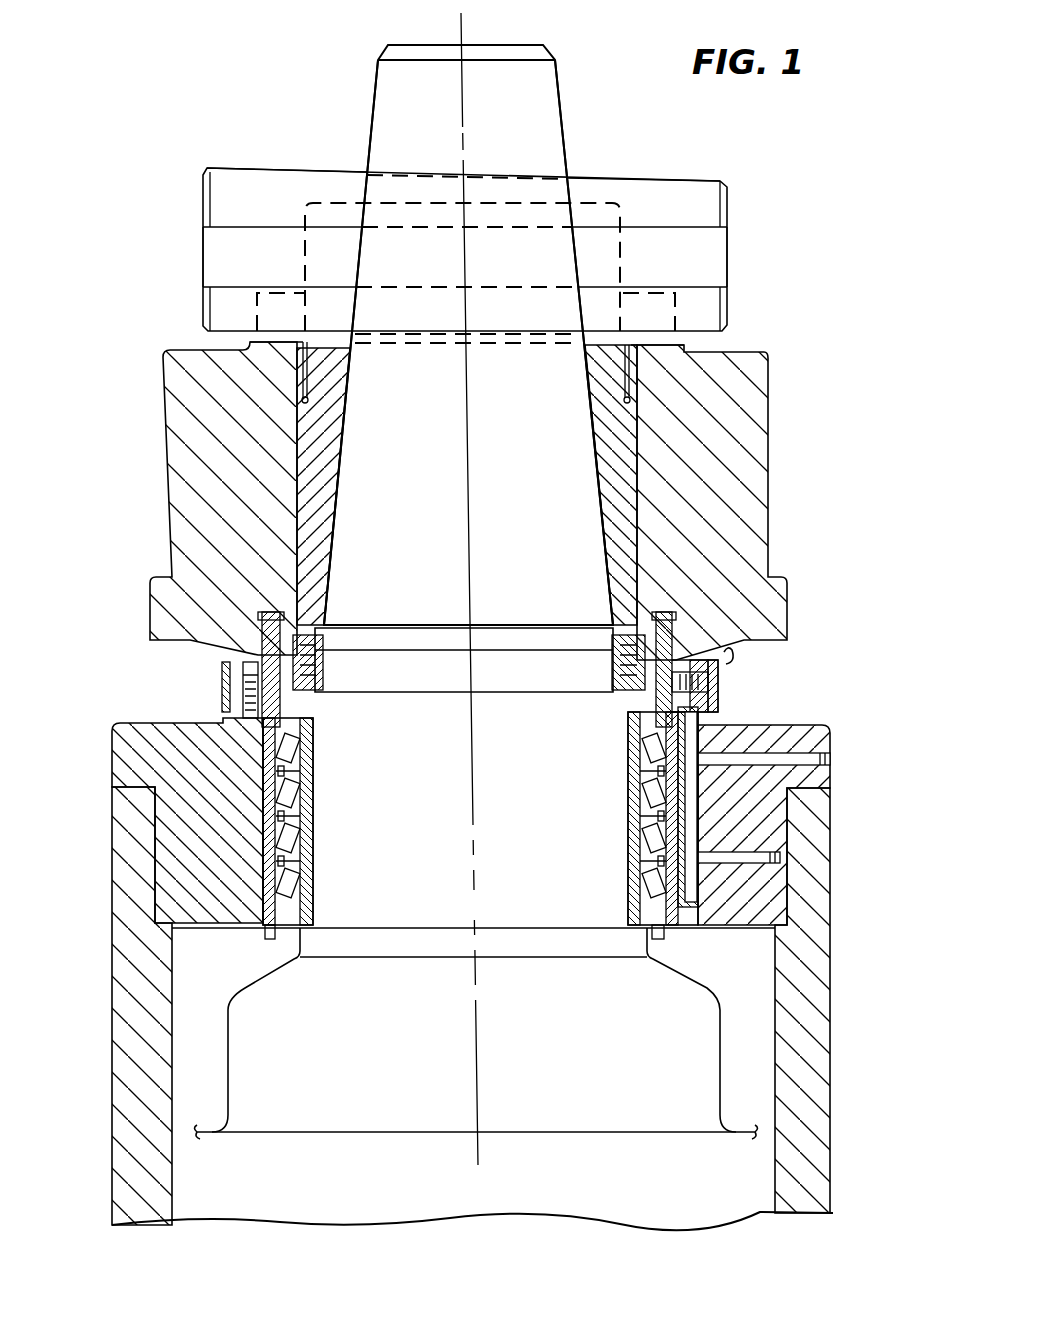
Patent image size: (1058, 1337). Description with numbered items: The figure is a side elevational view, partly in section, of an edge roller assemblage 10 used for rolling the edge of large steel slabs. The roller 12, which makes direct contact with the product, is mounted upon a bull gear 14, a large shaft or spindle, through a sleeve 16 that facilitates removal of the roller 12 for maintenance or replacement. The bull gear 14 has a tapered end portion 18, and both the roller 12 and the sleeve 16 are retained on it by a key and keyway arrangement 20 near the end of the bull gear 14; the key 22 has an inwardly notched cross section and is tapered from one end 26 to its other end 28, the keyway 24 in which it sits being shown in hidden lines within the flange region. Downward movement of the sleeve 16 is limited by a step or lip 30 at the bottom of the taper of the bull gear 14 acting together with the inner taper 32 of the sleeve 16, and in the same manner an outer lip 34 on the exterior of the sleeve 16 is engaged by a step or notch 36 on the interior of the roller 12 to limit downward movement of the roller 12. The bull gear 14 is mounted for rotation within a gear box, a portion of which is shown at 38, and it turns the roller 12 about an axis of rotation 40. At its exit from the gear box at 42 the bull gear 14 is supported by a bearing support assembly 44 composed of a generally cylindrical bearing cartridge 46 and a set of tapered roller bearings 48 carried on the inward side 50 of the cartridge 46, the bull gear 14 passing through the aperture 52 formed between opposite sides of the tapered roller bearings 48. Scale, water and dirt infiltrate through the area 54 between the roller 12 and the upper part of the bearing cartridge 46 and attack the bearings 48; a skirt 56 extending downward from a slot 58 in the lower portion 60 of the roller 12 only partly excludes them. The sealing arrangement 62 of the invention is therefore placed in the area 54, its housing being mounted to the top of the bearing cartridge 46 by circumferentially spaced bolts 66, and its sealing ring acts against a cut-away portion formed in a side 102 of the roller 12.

The roller assemblage 10 is at (825, 635).
The roller 12 is at (186, 462).
The bull gear 14 is at (449, 498).
The sleeve 16 is at (604, 466).
The tapered end portion 18 is at (583, 268).
The key and keyway arrangement 20 is at (571, 104).
The key 22 is at (610, 181).
The drive slot 24 is at (386, 168).
The one end of key 26 is at (200, 253).
The other end of key 28 is at (468, 227).
The step or lip 30 is at (610, 652).
The inner taper 32 is at (601, 512).
The outer lip 34 is at (302, 402).
The step or notch 36 is at (302, 398).
The gear box 38 is at (130, 980).
The axis of rotation 40 is at (464, 30).
The exit from gear box 42 is at (797, 719).
The bearing support assembly 44 is at (464, 801).
The bearing cartridge 46 is at (176, 832).
The tapered roller bearings 48 is at (290, 784).
The inward side of cartridge 50 is at (270, 830).
The aperture 52 is at (628, 913).
The area 54 is at (760, 693).
The skirt 56 is at (222, 694).
The slot 58 is at (727, 655).
The lower portion of roller 60 is at (730, 691).
The sealing arrangement 62 is at (233, 626).
The bolts 66 is at (243, 676).
The side of roller 102 is at (625, 604).